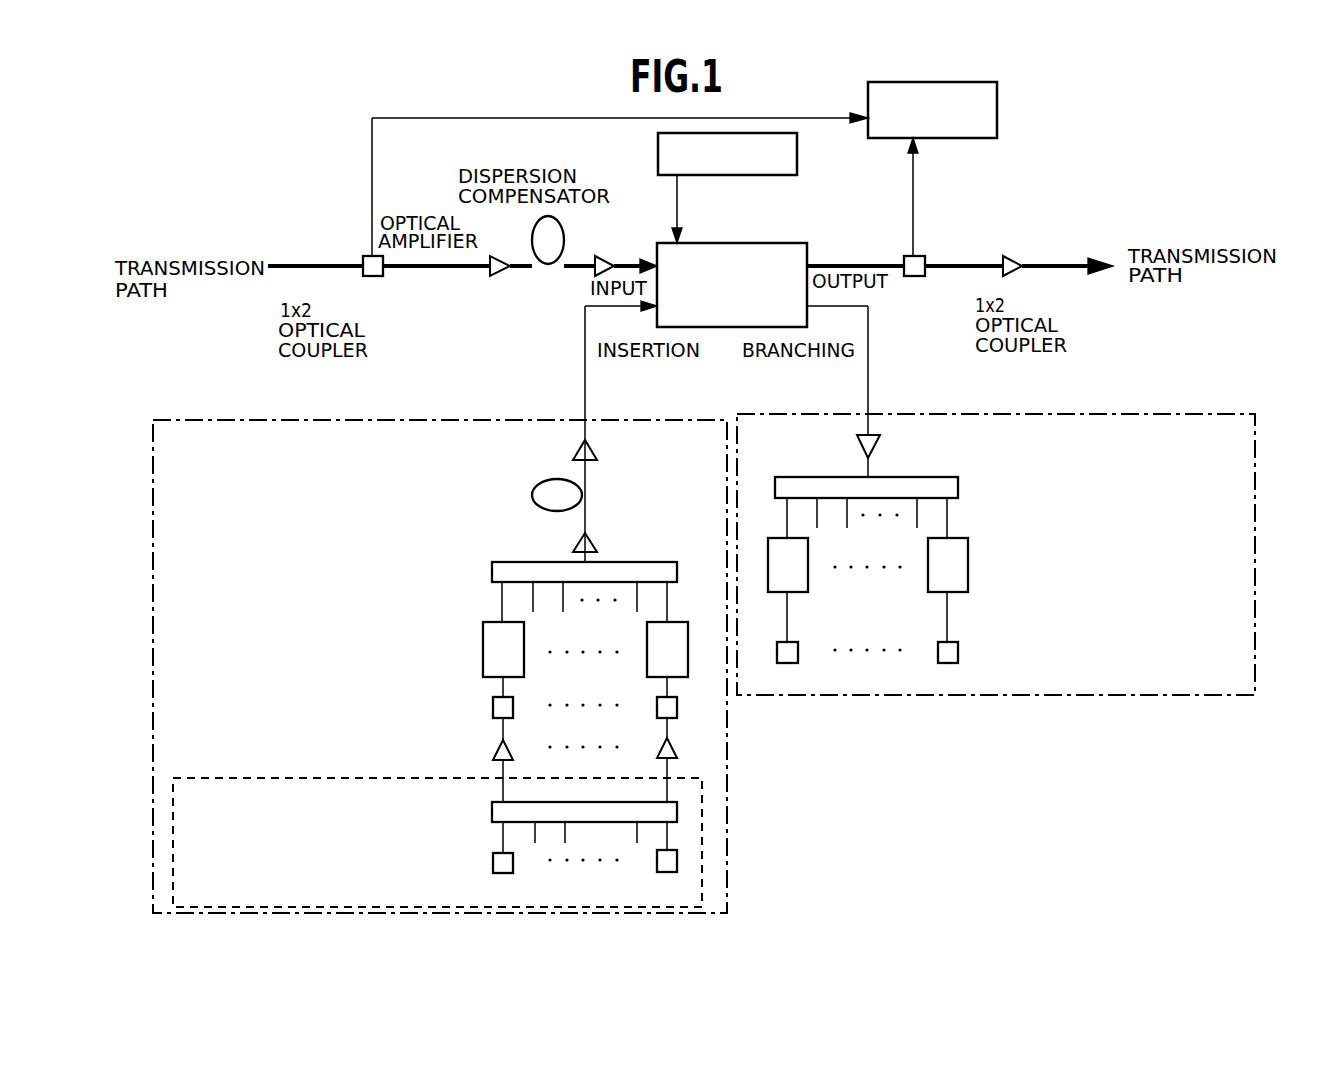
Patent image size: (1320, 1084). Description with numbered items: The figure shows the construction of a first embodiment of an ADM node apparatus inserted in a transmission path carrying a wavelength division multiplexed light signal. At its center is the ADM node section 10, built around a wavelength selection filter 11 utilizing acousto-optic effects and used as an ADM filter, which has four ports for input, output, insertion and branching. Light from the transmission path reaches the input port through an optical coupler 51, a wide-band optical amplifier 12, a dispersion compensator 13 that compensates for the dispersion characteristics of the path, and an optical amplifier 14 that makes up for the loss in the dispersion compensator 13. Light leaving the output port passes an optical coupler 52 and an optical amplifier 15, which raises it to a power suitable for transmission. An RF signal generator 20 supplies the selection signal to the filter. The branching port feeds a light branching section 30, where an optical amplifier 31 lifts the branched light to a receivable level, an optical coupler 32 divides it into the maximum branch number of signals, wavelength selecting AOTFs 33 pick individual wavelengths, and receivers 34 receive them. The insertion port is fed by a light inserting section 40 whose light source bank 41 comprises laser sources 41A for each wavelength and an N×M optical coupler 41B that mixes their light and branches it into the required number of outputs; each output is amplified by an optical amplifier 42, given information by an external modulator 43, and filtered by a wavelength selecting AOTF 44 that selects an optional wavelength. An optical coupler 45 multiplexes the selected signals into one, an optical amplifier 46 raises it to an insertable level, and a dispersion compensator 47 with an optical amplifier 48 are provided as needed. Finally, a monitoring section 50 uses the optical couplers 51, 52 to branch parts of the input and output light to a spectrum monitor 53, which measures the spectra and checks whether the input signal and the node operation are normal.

The ADM node section 10 is at (548, 306).
The wavelength selection filter (AOTF) 11 is at (762, 243).
The optical amplifier 12 is at (500, 257).
The dispersion compensator 13 is at (563, 232).
The optical amplifier 14 is at (608, 257).
The optical amplifier 15 is at (1014, 255).
The RF signal generator 20 is at (797, 147).
The light branching section 30 is at (996, 539).
The optical amplifier 31 is at (860, 446).
The optical coupler 32 is at (958, 480).
The wavelength selecting AOTF 33 is at (780, 538).
The receiver 34 is at (778, 642).
The light inserting section 40 is at (440, 652).
The light source bank 41 is at (437, 830).
The laser source 41A is at (493, 876).
The N×M optical coupler 41B is at (492, 824).
The optical amplifier 42 is at (510, 745).
The modulator 43 is at (513, 708).
The wavelength selecting AOTF 44 is at (525, 655).
The optical coupler 45 is at (650, 562).
The optical amplifier 46 is at (596, 545).
The dispersion compensator 47 is at (541, 505).
The optical amplifier 48 is at (594, 450).
The monitoring section 50 is at (1042, 124).
The optical coupler 51 is at (366, 279).
The optical coupler 52 is at (922, 278).
The spectrum monitor 53 is at (958, 138).